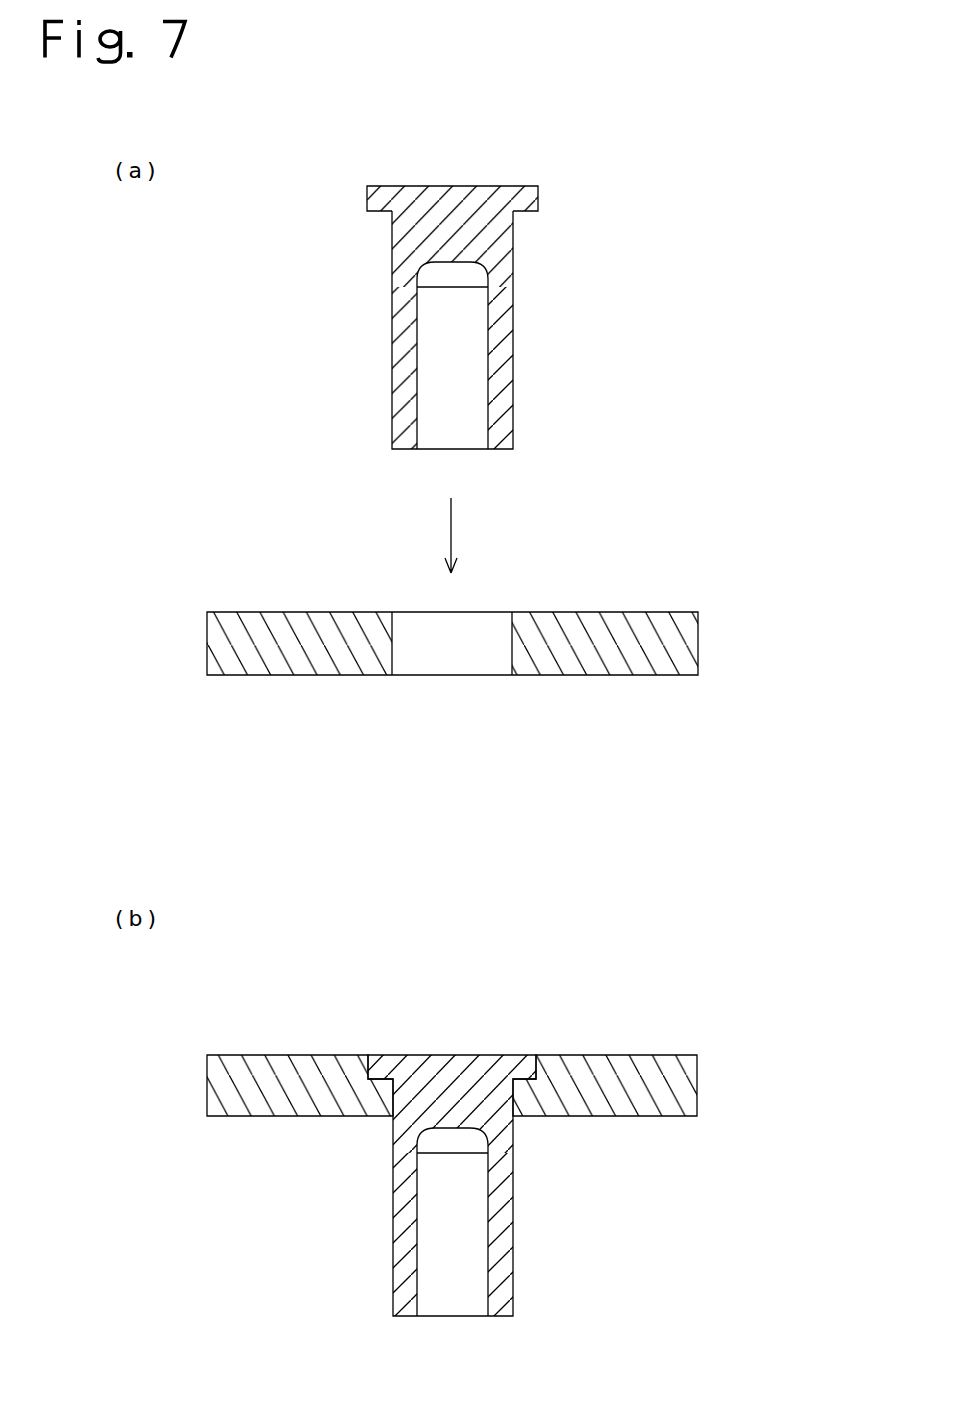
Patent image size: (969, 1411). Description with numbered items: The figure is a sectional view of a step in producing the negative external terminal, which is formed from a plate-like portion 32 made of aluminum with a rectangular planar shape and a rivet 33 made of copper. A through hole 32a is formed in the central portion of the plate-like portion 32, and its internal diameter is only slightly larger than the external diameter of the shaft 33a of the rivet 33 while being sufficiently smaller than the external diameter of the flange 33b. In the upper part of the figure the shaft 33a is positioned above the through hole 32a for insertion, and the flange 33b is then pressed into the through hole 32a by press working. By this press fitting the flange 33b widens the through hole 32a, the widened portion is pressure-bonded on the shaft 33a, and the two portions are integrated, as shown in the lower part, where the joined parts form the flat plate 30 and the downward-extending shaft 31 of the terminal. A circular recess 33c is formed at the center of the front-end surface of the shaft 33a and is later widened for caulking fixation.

The flat plate 30 is at (652, 1056).
The shaft 31 is at (508, 1242).
The plate-like portion 32 is at (452, 594).
The through hole 32a is at (510, 630).
The rivet 33 is at (513, 348).
The shaft of the rivet 33a is at (513, 377).
The flange 33b is at (533, 202).
The circular recess 33c is at (417, 408).